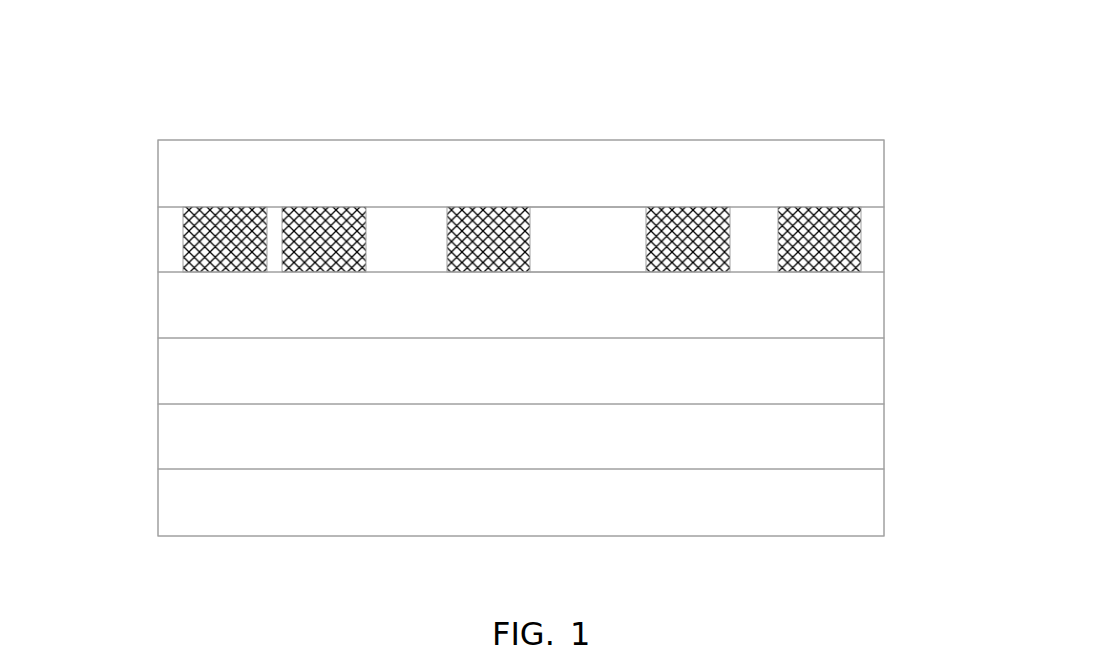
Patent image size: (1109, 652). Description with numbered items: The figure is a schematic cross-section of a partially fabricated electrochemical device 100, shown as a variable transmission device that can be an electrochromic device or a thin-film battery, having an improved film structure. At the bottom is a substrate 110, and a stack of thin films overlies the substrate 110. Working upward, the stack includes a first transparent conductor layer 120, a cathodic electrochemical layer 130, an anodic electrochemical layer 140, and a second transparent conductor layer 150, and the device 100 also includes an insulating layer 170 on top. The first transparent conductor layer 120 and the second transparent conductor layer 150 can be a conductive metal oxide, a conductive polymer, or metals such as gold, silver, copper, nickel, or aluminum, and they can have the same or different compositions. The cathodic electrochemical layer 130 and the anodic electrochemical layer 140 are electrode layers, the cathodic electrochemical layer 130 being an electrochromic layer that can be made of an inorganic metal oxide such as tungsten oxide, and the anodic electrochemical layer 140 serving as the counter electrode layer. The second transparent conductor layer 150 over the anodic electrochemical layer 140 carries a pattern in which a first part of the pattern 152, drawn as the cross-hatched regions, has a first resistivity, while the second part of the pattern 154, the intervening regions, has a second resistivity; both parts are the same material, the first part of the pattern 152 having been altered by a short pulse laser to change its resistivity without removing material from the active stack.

The electrochemical device 100 is at (310, 76).
The substrate 110 is at (886, 501).
The first transparent conductor layer 120 is at (886, 436).
The cathodic electrochemical layer 130 is at (886, 369).
The anodic electrochemical layer 140 is at (886, 304).
The second transparent conductor layer 150 is at (886, 238).
The first part of the pattern 152 is at (187, 232).
The second part of the pattern 154 is at (596, 238).
The insulating layer 170 is at (868, 172).